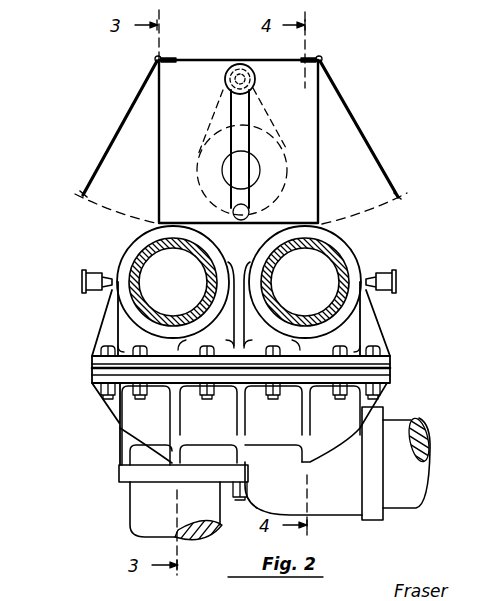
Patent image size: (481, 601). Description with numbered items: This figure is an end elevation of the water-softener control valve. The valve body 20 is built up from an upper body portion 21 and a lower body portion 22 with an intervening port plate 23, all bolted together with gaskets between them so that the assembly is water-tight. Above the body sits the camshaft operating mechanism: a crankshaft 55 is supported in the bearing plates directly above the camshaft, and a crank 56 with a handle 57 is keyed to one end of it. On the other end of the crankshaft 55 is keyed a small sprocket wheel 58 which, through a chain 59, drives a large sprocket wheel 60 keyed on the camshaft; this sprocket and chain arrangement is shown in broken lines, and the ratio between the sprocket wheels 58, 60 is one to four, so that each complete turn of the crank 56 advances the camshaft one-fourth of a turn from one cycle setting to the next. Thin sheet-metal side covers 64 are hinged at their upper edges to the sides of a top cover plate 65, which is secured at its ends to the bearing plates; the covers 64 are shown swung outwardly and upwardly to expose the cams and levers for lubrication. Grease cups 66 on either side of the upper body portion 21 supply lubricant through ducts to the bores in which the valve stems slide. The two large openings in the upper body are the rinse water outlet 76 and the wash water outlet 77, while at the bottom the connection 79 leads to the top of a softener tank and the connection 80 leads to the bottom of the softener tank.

The valve body 20 is at (100, 412).
The upper body portion 21 is at (108, 329).
The lower body portion 22 is at (138, 422).
The port plate 23 is at (92, 371).
The crankshaft 55 is at (256, 44).
The crank 56 is at (240, 146).
The handle 57 is at (250, 211).
The small sprocket wheel 58 is at (222, 95).
The chain 59 is at (213, 116).
The large sprocket wheel 60 is at (209, 167).
The side covers 64 is at (98, 163).
The top cover plate 65 is at (200, 50).
The grease cups 66 is at (79, 283).
The rinse water outlet 76 is at (165, 264).
The wash water outlet 77 is at (326, 278).
The connection 79 is at (370, 498).
The connection 80 is at (152, 473).